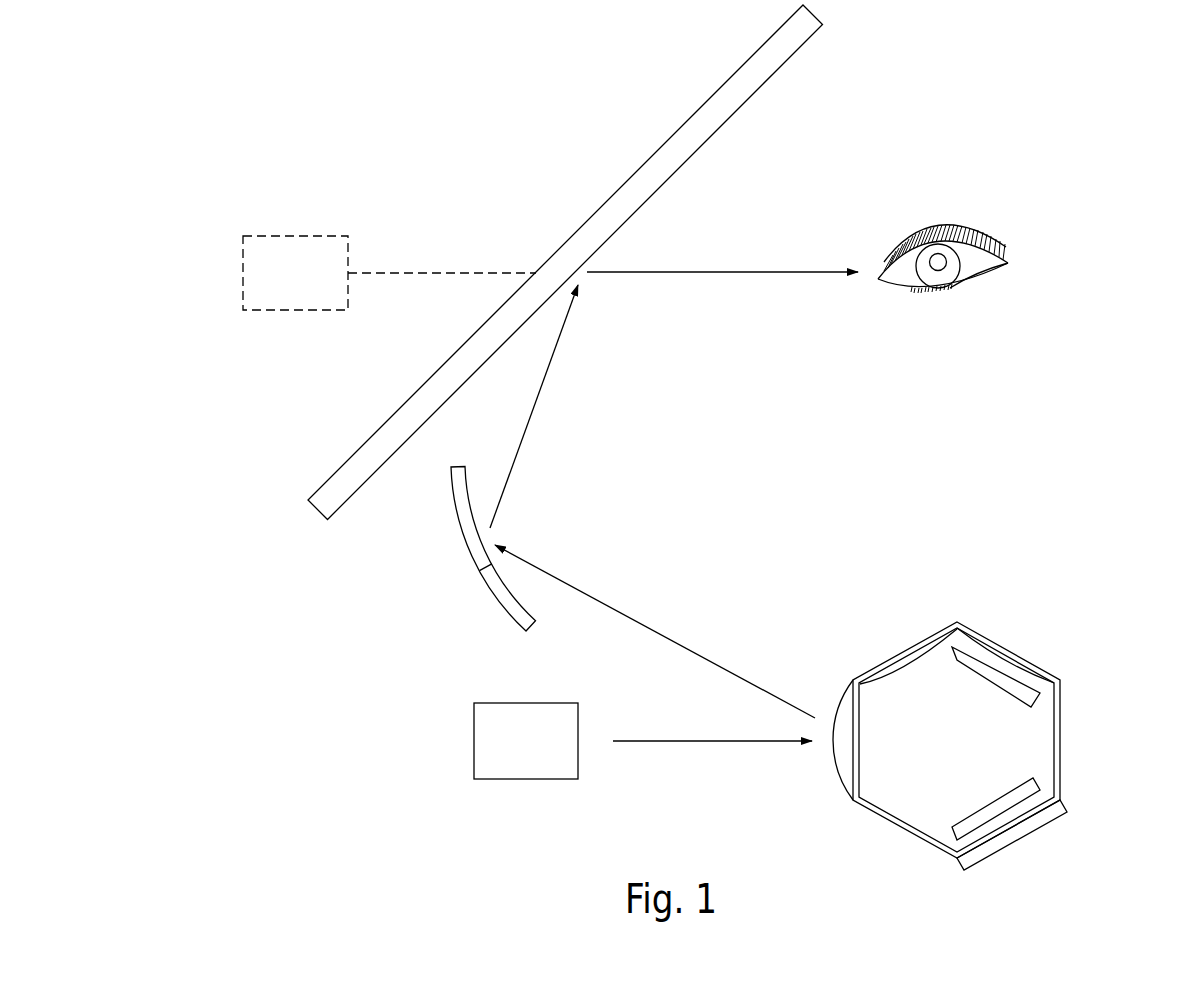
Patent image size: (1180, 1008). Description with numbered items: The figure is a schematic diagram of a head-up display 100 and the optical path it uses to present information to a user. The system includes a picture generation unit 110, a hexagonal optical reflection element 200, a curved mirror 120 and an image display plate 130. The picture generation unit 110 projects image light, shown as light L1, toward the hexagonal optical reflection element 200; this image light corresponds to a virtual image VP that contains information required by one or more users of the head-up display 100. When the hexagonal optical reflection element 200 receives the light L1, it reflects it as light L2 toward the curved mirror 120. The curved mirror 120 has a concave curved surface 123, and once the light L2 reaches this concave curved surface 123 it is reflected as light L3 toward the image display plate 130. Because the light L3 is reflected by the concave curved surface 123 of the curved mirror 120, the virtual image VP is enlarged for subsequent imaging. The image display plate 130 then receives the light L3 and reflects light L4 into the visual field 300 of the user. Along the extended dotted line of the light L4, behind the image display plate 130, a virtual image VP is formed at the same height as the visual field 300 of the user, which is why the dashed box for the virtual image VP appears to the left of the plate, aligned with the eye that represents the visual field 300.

The head-up display 100 is at (223, 161).
The picture generation unit 110 is at (550, 757).
The curved mirror 120 is at (470, 540).
The concave curved surface 123 is at (481, 570).
The image display plate 130 is at (318, 510).
The hexagonal optical reflection element 200 is at (1061, 745).
The visual field 300 is at (982, 280).
The virtual image VP is at (317, 285).
The light L1 is at (712, 764).
The light L2 is at (655, 631).
The light L3 is at (535, 406).
The light L4 is at (722, 254).